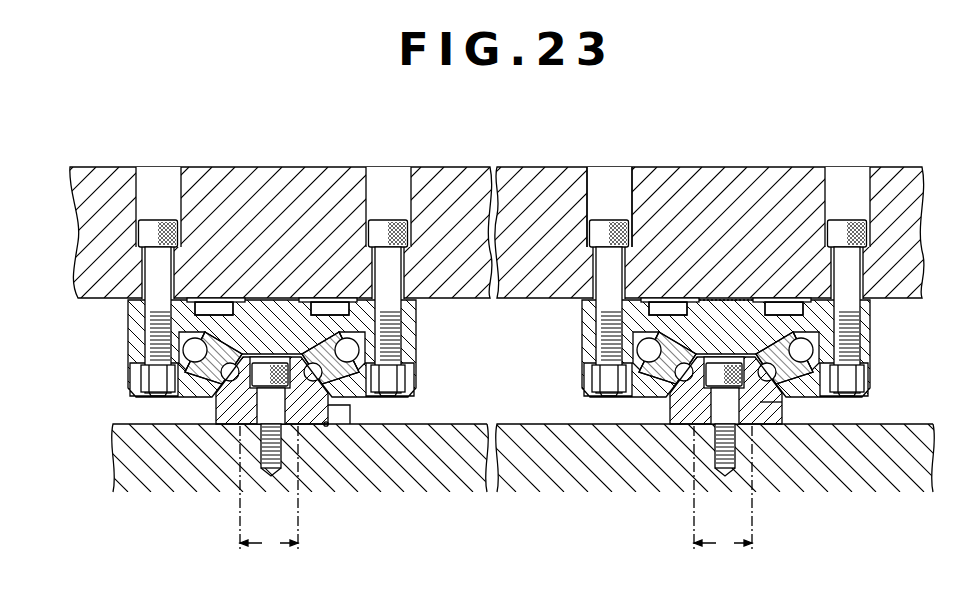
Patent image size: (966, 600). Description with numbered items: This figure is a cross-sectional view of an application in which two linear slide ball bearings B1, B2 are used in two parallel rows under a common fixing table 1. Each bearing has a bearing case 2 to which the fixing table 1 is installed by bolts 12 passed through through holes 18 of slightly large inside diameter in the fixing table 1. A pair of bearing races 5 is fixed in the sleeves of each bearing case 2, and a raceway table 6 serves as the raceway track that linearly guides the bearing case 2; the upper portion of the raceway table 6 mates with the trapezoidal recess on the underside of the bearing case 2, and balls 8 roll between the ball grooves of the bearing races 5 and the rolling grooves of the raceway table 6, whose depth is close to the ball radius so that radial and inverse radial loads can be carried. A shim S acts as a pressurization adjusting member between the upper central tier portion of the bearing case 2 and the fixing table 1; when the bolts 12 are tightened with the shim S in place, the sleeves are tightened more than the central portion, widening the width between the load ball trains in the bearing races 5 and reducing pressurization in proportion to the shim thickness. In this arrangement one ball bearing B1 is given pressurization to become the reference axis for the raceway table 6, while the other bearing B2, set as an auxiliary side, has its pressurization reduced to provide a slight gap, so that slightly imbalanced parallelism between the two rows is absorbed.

The fixing table 1 is at (509, 166).
The bearing case 2 is at (420, 318).
The bearing races 5 is at (221, 308).
The raceway table 6 is at (217, 410).
The balls 8 is at (198, 364).
The bolts 12 is at (157, 222).
The through holes 18 is at (596, 178).
The shim S is at (720, 298).
The ball bearing B1 is at (128, 330).
The ball bearing B2 is at (878, 352).